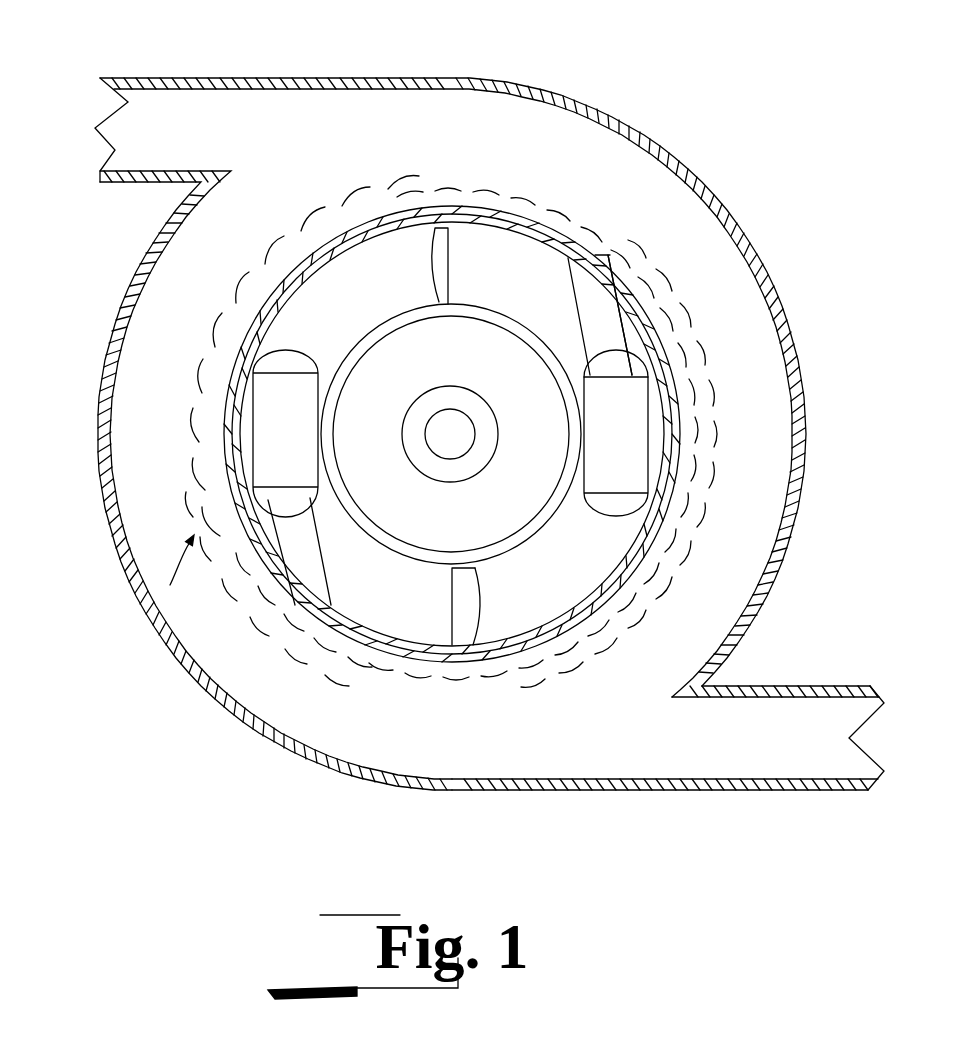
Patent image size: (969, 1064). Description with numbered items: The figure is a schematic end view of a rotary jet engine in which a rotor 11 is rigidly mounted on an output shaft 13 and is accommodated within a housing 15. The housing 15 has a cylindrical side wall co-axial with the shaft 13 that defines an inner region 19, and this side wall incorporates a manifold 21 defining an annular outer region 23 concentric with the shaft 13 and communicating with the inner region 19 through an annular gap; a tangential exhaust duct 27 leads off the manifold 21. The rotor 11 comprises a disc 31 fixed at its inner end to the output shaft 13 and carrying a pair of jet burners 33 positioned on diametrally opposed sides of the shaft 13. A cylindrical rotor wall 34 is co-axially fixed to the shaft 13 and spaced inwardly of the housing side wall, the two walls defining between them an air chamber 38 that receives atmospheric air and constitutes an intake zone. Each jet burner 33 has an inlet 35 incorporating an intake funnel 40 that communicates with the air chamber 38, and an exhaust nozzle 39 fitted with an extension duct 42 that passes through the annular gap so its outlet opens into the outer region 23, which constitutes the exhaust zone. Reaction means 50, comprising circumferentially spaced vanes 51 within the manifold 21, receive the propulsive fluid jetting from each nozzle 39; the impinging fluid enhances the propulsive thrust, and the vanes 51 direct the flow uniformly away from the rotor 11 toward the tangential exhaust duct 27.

The rotor 11 is at (507, 317).
The output shaft 13 is at (458, 452).
The housing 15 is at (700, 188).
The inner region 19 is at (500, 207).
The manifold 21 is at (252, 730).
The annular outer region 23 is at (725, 222).
The tangential exhaust duct 27 is at (812, 760).
The disc 31 is at (615, 240).
The jet burners 33 is at (277, 407).
The cylindrical rotor wall 34 is at (558, 280).
The inlet 35 is at (562, 607).
The air chamber 38 is at (402, 627).
The exhaust nozzle 39 is at (630, 370).
The intake funnel 40 is at (493, 630).
The extension duct 42 is at (608, 315).
The reaction means 50 is at (170, 585).
The vanes 51 is at (240, 592).